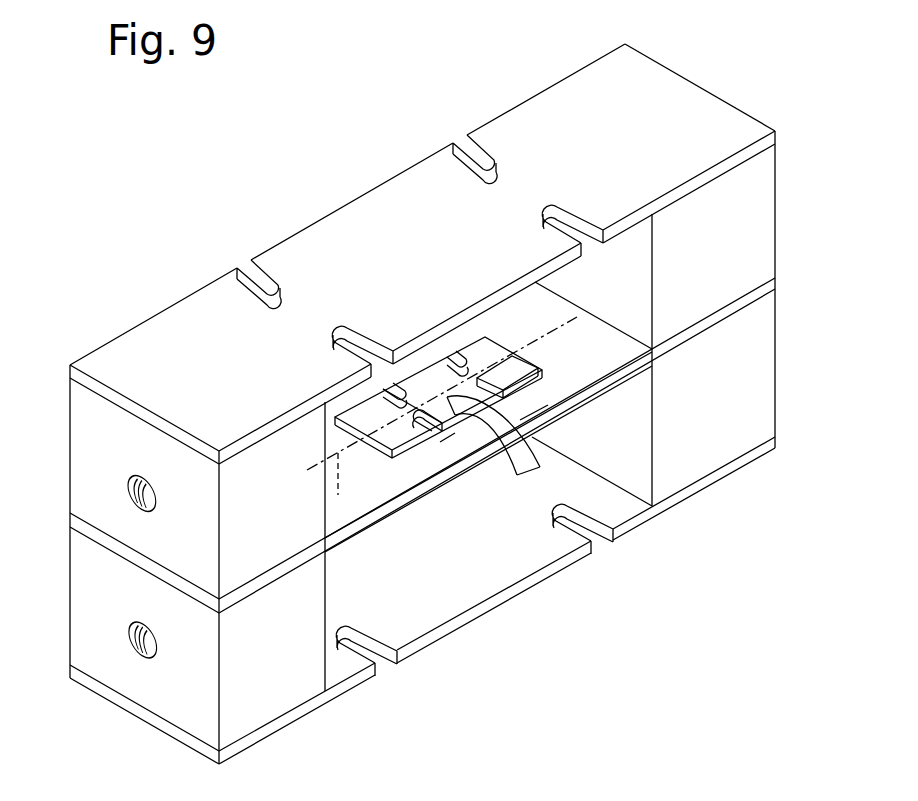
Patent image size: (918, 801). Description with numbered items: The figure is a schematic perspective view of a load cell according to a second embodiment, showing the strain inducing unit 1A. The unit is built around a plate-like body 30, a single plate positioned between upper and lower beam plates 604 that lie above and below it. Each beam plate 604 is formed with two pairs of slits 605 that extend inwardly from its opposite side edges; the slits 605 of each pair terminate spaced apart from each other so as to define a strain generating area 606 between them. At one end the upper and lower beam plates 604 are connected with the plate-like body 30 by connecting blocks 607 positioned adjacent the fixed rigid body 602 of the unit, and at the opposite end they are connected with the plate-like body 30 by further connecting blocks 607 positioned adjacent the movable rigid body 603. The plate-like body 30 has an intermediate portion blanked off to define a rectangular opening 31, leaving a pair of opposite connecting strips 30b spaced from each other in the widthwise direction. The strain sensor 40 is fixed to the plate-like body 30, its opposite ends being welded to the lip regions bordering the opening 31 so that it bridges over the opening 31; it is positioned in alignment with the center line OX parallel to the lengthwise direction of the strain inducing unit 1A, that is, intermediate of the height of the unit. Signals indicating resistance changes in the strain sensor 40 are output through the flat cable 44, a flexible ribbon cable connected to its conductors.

The strain inducing unit 1A is at (385, 155).
The plate-like body 30 is at (577, 403).
The connecting strips 30b is at (534, 440).
The rectangular opening 31 is at (440, 442).
The strain sensor 40 is at (503, 351).
The flat cable 44 is at (507, 463).
The fixed rigid body 602 is at (766, 160).
The movable rigid body 603 is at (133, 523).
The beam plates 604 is at (345, 225).
The slits 605 is at (255, 283).
The strain generating area 606 is at (300, 317).
The connecting blocks 607 is at (745, 207).